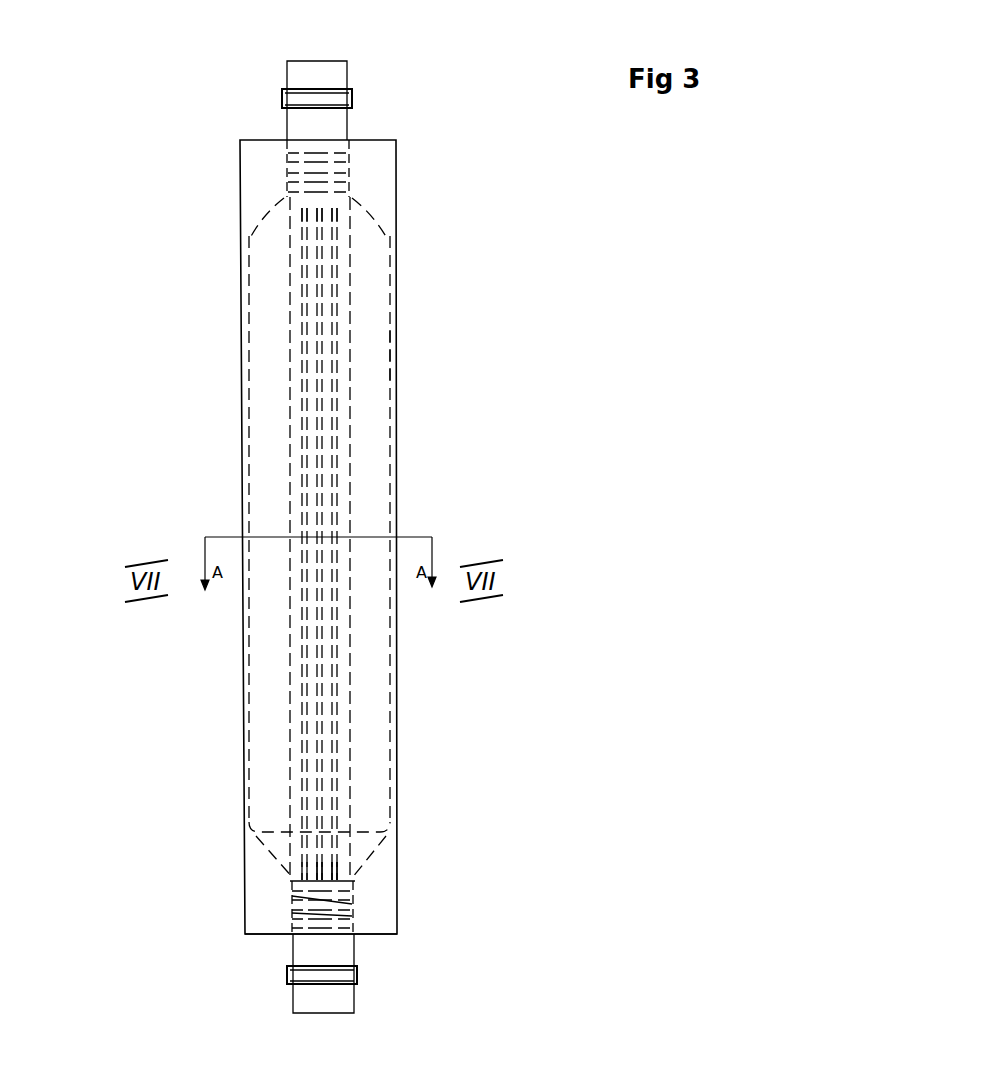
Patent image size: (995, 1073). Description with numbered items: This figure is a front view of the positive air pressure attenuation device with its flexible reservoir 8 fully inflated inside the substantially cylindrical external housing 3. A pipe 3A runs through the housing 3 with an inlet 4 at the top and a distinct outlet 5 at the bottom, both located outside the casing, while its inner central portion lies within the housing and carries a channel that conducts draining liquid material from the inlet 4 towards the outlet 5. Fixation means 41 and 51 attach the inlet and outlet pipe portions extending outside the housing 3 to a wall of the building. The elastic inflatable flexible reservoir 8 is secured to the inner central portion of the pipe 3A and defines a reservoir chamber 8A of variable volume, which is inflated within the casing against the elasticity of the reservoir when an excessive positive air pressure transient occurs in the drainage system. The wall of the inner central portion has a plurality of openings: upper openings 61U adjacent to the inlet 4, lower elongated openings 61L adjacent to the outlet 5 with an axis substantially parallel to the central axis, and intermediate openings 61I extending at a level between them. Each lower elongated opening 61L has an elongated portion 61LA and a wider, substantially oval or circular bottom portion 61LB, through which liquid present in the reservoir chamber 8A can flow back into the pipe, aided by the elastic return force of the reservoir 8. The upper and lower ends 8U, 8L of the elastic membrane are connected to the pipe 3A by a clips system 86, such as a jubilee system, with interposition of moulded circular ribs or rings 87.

The external housing 3 is at (396, 256).
The pipe 3A is at (354, 941).
The inlet 4 is at (345, 66).
The fixation means 41 is at (352, 99).
The outlet 5 is at (354, 998).
The fixation means 51 is at (357, 967).
The flexible reservoir 8 is at (410, 420).
The reservoir chamber 8A is at (375, 360).
The upper end of flexible membrane 8U is at (347, 195).
The lower end of flexible membrane 8L is at (290, 880).
The clips system 86 is at (355, 915).
The moulded ribs 87 is at (495, 915).
The intermediate openings 61I is at (340, 502).
The upper openings 61U is at (332, 217).
The lower elongated openings 61L is at (322, 872).
The elongated portion 61LA is at (338, 858).
The bottom portion 61LB is at (345, 878).